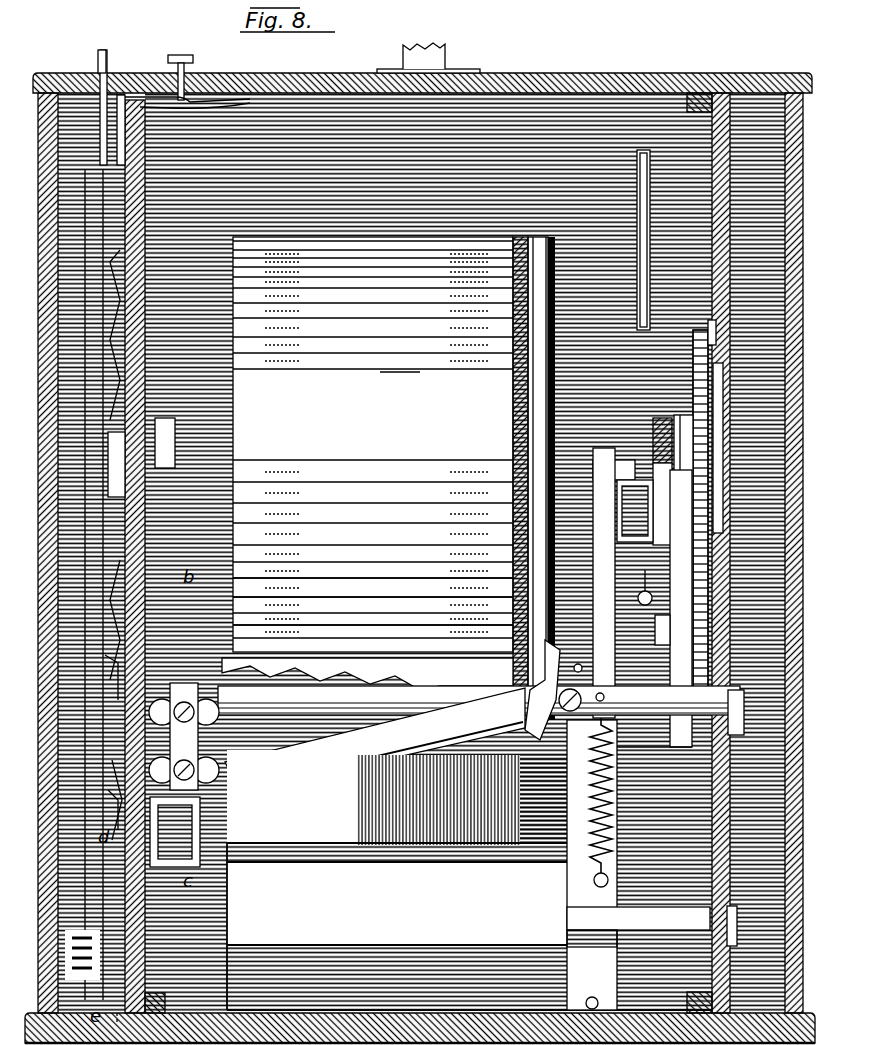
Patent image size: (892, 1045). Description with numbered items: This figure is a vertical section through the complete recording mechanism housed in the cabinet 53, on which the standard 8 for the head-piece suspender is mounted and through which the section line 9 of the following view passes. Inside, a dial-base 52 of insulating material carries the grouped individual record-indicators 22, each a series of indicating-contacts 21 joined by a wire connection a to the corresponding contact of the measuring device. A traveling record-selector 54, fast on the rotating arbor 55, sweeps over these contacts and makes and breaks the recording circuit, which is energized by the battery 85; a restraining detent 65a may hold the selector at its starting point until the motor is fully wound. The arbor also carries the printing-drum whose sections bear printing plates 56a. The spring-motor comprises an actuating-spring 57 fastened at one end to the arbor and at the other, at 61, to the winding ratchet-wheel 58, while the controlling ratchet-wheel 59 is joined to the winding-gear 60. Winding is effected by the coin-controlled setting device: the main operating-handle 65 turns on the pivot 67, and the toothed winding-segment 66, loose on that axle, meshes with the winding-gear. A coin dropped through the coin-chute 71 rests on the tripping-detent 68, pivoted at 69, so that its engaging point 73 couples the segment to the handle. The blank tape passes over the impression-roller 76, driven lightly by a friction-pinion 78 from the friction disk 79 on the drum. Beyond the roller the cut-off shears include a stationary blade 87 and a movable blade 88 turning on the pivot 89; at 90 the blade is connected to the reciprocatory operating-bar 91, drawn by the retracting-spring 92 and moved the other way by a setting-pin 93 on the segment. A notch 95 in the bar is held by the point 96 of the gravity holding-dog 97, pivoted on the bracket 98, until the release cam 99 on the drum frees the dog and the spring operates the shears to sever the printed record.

The cabinet 53 is at (594, 73).
The dial-base 52 is at (150, 192).
The traveling record-selector 54 is at (120, 262).
The battery 85 is at (85, 935).
The indicating-contact 21 is at (118, 665).
The individual record-indicator 22 is at (115, 798).
The wire connection a is at (99, 60).
The section line 9 9 is at (117, 73).
The restraining detent 65a is at (132, 92).
The standard 8 is at (442, 48).
The winding ratchet-wheel 58 is at (502, 237).
The printing plate 56a is at (403, 376).
The catch shoulder or notch 95 is at (513, 578).
The point of gravity holding-dog 96 is at (513, 605).
The gravity holding-dog 97 is at (513, 633).
The friction drive wheel or disk 79 is at (548, 300).
The coin-chute 71 is at (637, 266).
The controlling ratchet-wheel 59 is at (693, 393).
The winding-gear 60 is at (693, 402).
The spring attachment point 61 is at (728, 372).
The actuating-spring 57 is at (722, 430).
The main operating-handle 65 is at (653, 430).
The pivot or axle 67 is at (640, 462).
The key member or toothed winding-segment 66 is at (653, 505).
The reciprocatory operating-bar 91 is at (600, 560).
The engaging point of detent 73 is at (670, 545).
The rotating arbor 55 is at (178, 458).
The coin-held tripping-detent 68 is at (700, 638).
The stationary or ledger blade 87 is at (481, 696).
The movable blade 88 is at (375, 740).
The pivot 89 is at (184, 688).
The release cam or projection 99 is at (545, 688).
The connection to operating-bar 90 is at (600, 696).
The impression-roller 76 is at (373, 797).
The friction-pinion 78 is at (540, 740).
The detent pivot 69 is at (628, 752).
The retracting-spring 92 is at (612, 836).
The setting-pin 93 is at (655, 736).
The bracket 98 is at (600, 978).